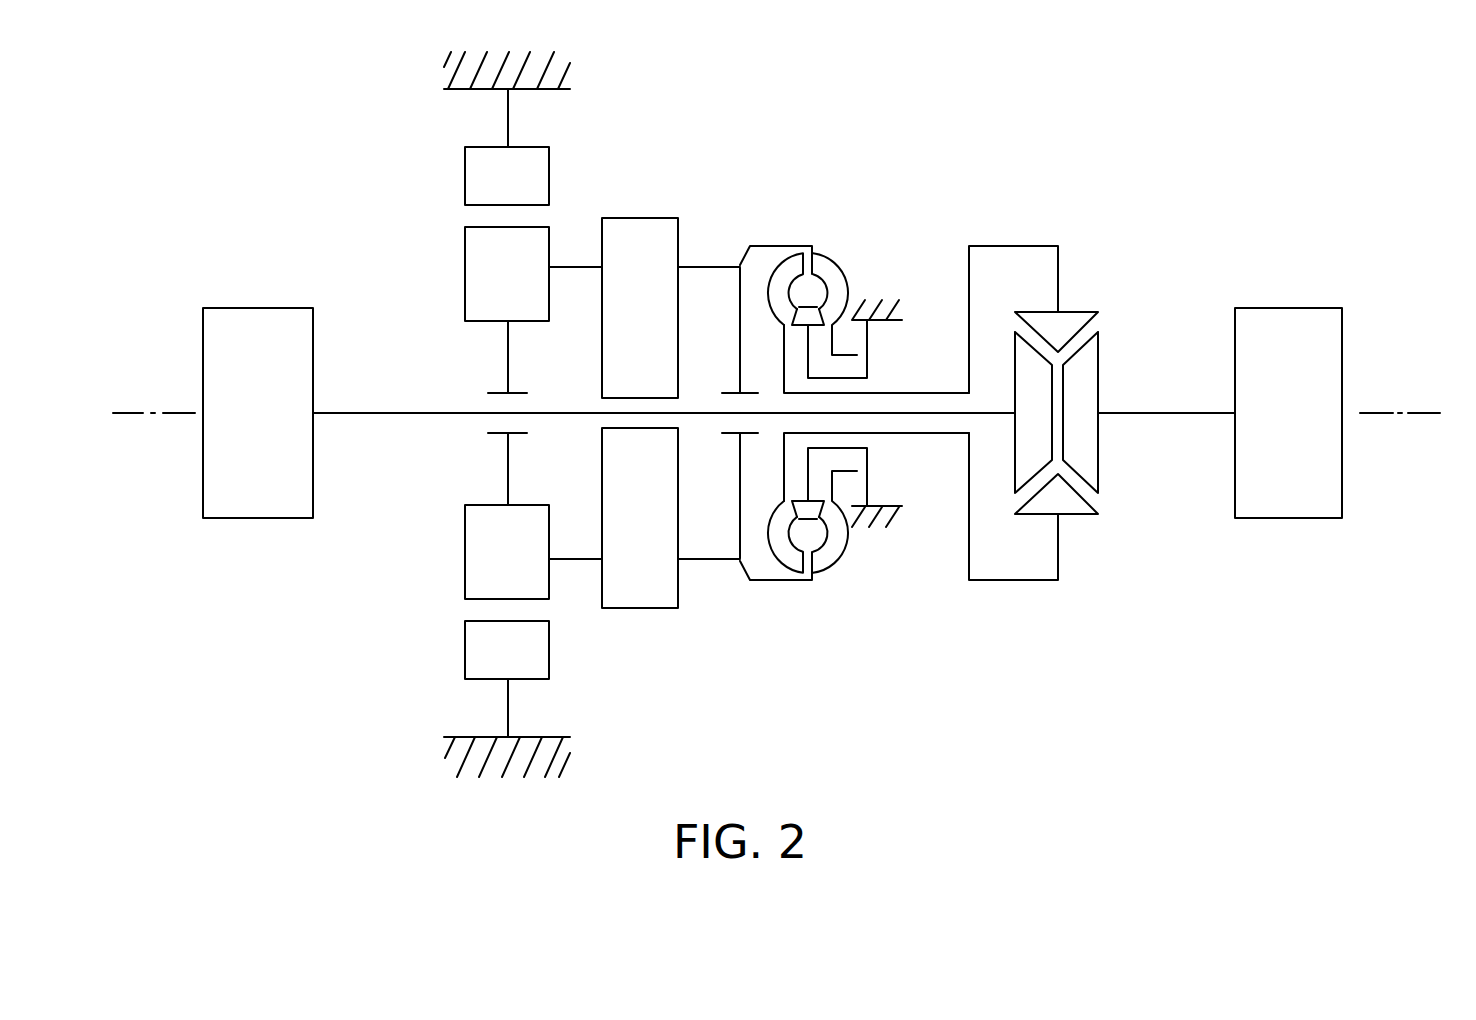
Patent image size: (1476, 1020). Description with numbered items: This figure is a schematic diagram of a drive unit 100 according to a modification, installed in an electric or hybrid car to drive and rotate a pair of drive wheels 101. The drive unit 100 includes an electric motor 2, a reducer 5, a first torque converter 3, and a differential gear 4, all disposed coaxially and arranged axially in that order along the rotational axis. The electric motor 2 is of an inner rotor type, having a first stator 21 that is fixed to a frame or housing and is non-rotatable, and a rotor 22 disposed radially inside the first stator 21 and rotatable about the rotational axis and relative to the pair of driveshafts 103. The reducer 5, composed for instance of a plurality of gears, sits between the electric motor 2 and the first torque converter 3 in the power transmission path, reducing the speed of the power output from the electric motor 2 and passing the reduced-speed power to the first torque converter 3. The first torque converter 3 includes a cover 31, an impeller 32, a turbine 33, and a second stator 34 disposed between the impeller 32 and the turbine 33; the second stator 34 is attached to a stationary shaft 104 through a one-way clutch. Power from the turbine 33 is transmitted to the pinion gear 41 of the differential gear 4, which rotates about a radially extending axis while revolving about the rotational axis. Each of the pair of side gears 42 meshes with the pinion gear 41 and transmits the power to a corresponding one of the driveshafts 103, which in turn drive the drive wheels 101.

The drive unit 100 is at (991, 135).
The drive wheels 101 is at (243, 518).
The driveshafts 103 is at (410, 413).
The stationary shaft 104 is at (838, 378).
The electric motor 2 is at (438, 158).
The first stator 21 is at (475, 181).
The rotor 22 is at (473, 274).
The reducer 5 is at (647, 218).
The first torque converter 3 is at (826, 218).
The cover 31 is at (768, 245).
The impeller 32 is at (840, 270).
The turbine 33 is at (790, 262).
The second stator 34 is at (810, 312).
The differential gear 4 is at (1120, 293).
The pinion gear 41 is at (1068, 320).
The side gears 42 is at (1043, 407).